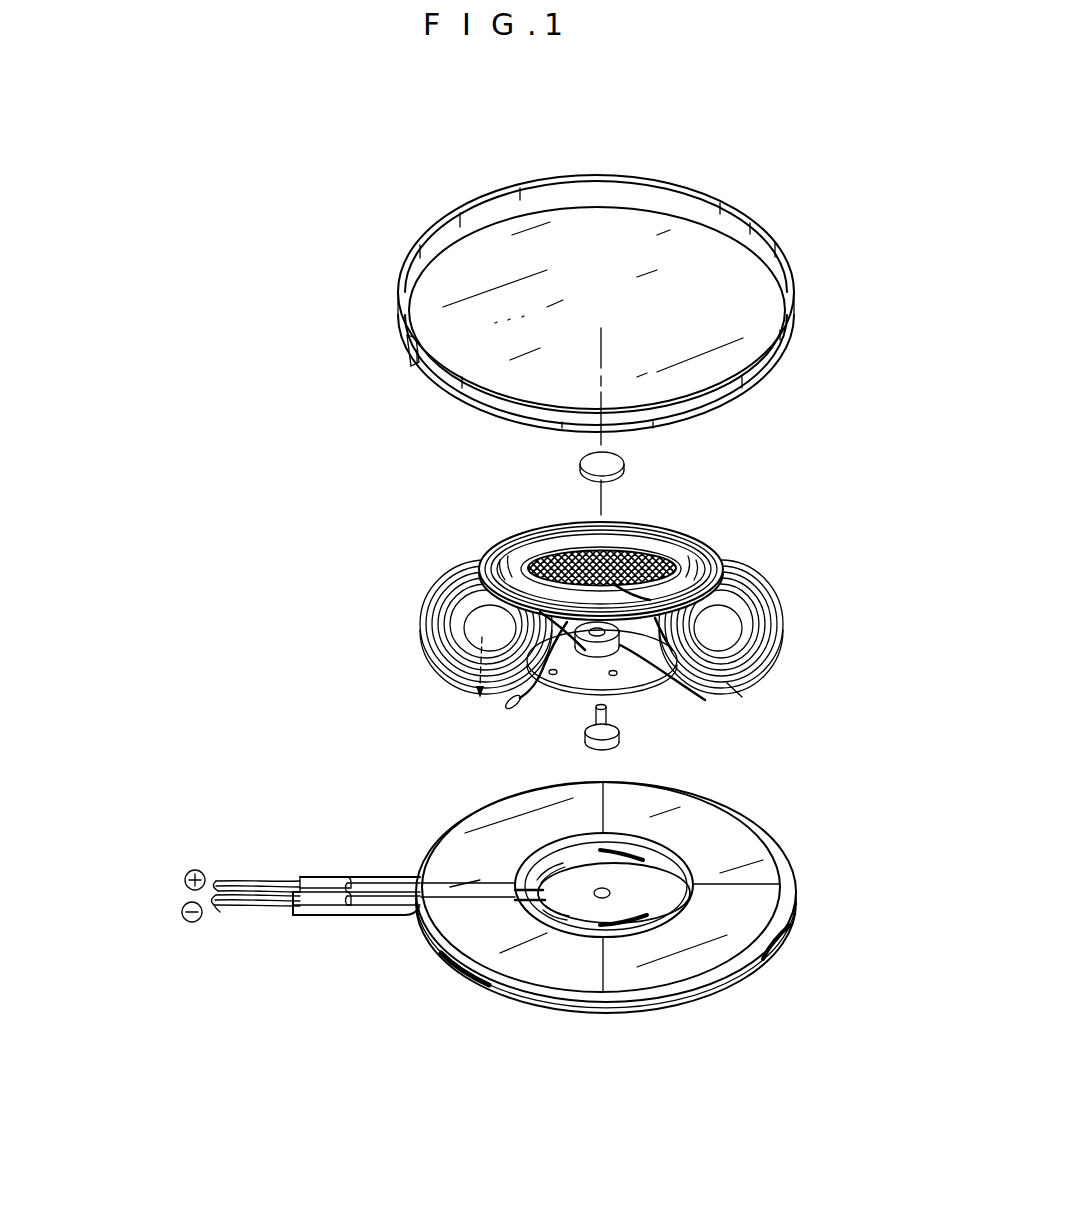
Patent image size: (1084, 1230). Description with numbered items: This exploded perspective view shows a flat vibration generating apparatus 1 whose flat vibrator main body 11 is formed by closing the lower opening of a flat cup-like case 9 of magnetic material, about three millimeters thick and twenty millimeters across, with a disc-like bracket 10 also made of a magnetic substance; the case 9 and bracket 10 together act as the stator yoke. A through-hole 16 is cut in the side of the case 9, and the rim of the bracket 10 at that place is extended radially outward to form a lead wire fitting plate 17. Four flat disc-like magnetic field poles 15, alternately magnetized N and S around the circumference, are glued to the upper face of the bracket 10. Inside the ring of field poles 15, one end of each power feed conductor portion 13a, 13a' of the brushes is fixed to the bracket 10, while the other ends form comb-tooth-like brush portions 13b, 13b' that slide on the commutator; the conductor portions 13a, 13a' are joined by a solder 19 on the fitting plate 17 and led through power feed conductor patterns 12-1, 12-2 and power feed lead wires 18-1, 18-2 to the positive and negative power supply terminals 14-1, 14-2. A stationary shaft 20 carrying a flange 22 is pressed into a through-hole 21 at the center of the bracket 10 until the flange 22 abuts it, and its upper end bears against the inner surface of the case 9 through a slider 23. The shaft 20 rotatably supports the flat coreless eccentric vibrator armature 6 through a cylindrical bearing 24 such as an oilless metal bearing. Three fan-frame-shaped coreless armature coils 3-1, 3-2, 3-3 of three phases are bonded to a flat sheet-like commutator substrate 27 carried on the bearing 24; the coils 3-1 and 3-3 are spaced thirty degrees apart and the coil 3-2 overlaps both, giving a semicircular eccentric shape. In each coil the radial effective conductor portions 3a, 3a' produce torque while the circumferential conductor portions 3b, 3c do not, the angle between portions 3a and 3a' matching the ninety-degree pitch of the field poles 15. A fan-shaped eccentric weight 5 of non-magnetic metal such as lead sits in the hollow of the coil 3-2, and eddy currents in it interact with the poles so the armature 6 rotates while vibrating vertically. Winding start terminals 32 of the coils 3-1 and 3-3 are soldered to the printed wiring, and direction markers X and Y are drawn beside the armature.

The flat vibration generating device 1 is at (762, 191).
The case 9 is at (783, 243).
The flat vibrator main body 11 is at (690, 188).
The through-hole 16 is at (410, 350).
The slider 23 is at (627, 466).
The armature 6 is at (725, 531).
The armature coil 3-1 is at (432, 603).
The armature coil 3-2 is at (514, 547).
The armature coil 3-3 is at (750, 613).
The effective conductor portion 3a is at (488, 579).
The effective conductor portion 3a' is at (726, 615).
The conductor portion 3b is at (633, 530).
The conductor portion 3c is at (520, 600).
The eccentric weight 5 is at (565, 553).
The bearing 24 is at (562, 683).
The commutator substrate 27 is at (553, 677).
The winding start terminals 32 is at (635, 683).
The X axis X is at (481, 685).
The Y axis Y is at (740, 702).
The stationary shaft 20 is at (612, 713).
The flange 22 is at (585, 742).
The bracket 10 is at (787, 895).
The magnetic field poles 15 is at (747, 850).
The through-hole 21 is at (612, 892).
The power feed conductor portion 13a is at (487, 818).
The power feed conductor portion 13a' is at (524, 987).
The brush portion 13b is at (663, 800).
The brush portion 13b' is at (659, 998).
The lead wire fitting plate 17 is at (318, 915).
The solder 19 is at (320, 877).
The power feed conductor pattern 12-1 is at (383, 883).
The power feed conductor pattern 12-2 is at (378, 905).
The power feed lead wire 18-1 is at (247, 875).
The power feed lead wire 18-2 is at (242, 905).
The positive power supply terminal 14-1 is at (192, 868).
The negative power supply terminal 14-2 is at (190, 923).